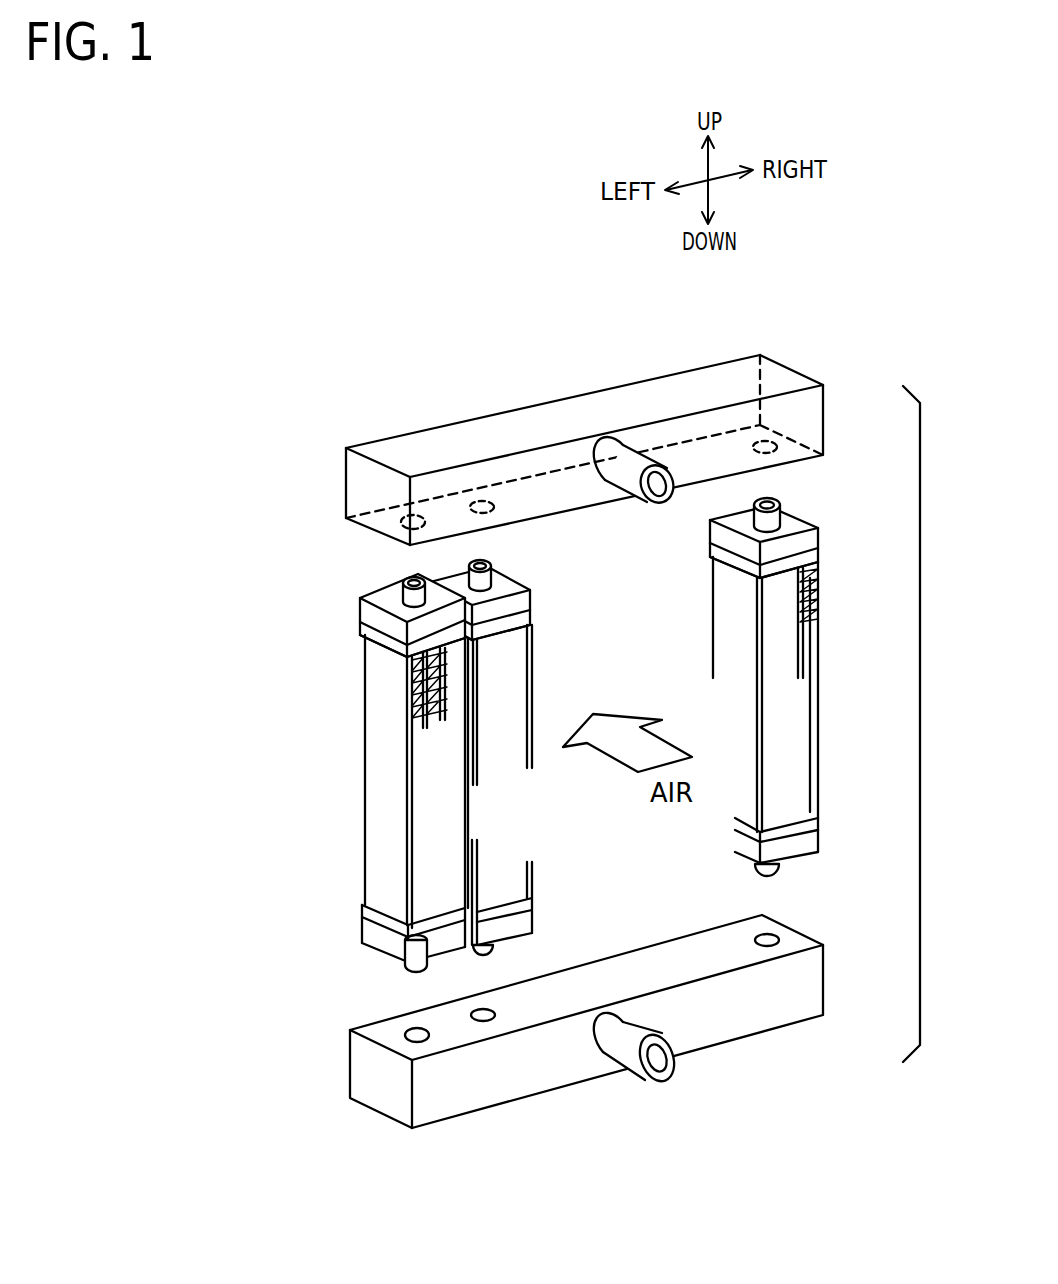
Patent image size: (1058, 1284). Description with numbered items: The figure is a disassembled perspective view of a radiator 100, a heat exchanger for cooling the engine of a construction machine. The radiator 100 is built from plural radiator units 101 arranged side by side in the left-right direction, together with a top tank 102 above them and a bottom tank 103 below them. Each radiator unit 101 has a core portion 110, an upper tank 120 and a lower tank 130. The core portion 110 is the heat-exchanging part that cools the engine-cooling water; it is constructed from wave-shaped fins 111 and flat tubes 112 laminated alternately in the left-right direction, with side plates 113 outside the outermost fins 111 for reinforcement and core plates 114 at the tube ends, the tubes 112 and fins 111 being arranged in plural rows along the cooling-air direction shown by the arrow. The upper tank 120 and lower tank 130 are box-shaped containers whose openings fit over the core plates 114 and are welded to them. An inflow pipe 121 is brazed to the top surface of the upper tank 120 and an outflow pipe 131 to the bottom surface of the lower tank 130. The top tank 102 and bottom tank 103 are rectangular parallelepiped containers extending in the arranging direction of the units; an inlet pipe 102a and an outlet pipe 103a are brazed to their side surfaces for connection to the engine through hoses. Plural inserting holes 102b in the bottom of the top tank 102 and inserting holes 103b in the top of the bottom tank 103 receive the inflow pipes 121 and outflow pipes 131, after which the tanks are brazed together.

The radiator 100 is at (119, 481).
The radiator unit 101 is at (196, 611).
The top tank 102 is at (362, 487).
The inlet pipe 102a is at (623, 463).
The inserting hole 102b is at (416, 522).
The bottom tank 103 is at (363, 1070).
The outlet pipe 103a is at (620, 1055).
The inserting hole 103b is at (417, 1032).
The core portion 110 is at (266, 645).
The fin 111 is at (410, 681).
The tube 112 is at (412, 701).
The side plate 113 is at (463, 760).
The core plate 114 is at (365, 633).
The upper tank 120 is at (360, 620).
The inflow pipe 121 is at (373, 588).
The lower tank 130 is at (362, 932).
The outflow pipe 131 is at (407, 968).